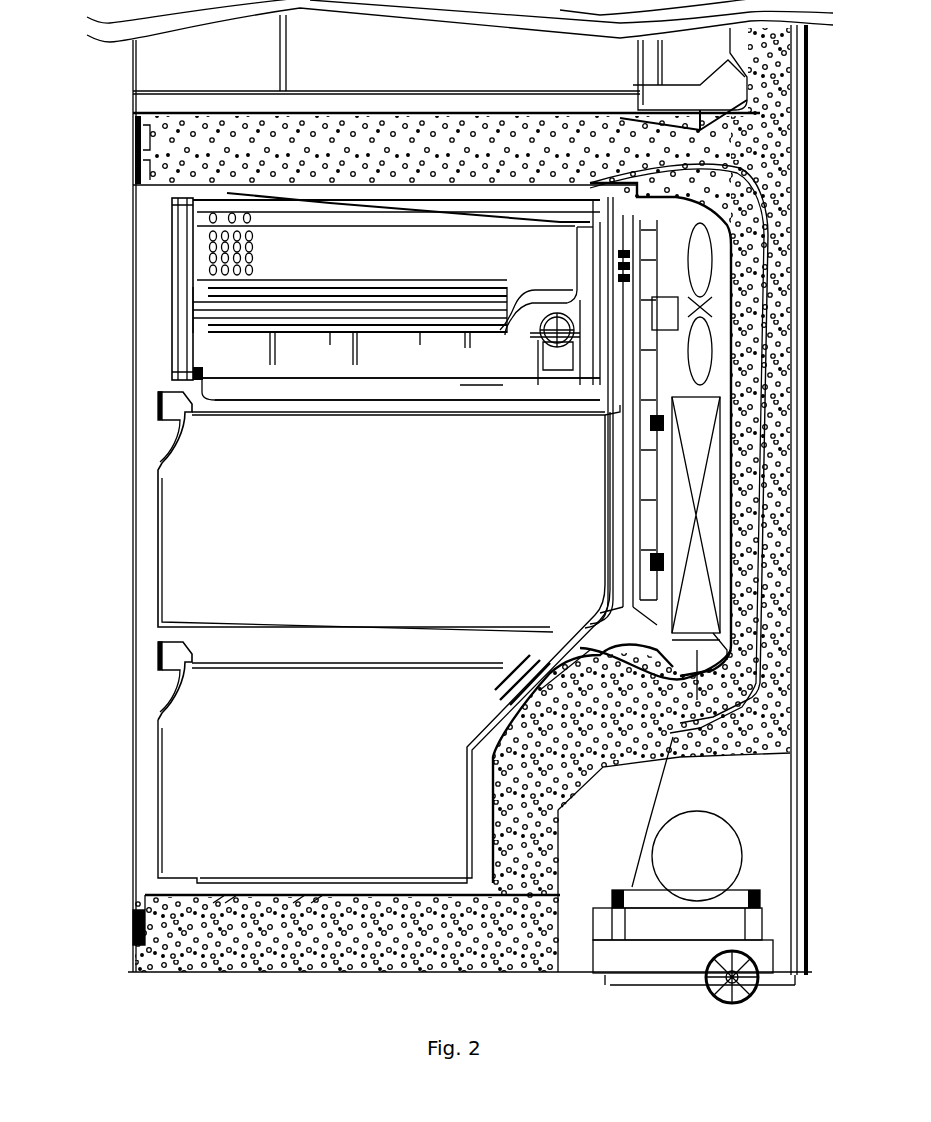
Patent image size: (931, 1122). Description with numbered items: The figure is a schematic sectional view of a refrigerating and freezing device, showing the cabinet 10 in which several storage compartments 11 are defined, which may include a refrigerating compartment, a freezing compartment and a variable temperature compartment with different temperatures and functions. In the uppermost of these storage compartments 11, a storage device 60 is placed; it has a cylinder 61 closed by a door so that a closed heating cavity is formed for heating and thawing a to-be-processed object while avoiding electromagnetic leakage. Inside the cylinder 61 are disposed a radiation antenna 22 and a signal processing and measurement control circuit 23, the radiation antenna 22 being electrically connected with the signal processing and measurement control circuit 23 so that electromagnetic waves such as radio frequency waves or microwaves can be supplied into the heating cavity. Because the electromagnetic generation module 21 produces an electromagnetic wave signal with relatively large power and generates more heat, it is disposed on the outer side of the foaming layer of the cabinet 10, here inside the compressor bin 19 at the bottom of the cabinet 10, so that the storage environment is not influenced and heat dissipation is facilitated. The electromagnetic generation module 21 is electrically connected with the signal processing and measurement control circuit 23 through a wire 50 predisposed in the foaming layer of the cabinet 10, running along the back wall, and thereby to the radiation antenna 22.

The cabinet 10 is at (118, 74).
The storage compartment 11 is at (143, 245).
The compressor bin 19 is at (765, 798).
The electromagnetic generation module 21 is at (742, 897).
The radiation antenna 22 is at (312, 335).
The signal processing and measurement control circuit 23 is at (535, 357).
The wire 50 is at (767, 262).
The storage device 60 is at (166, 312).
The cylinder 61 is at (225, 382).